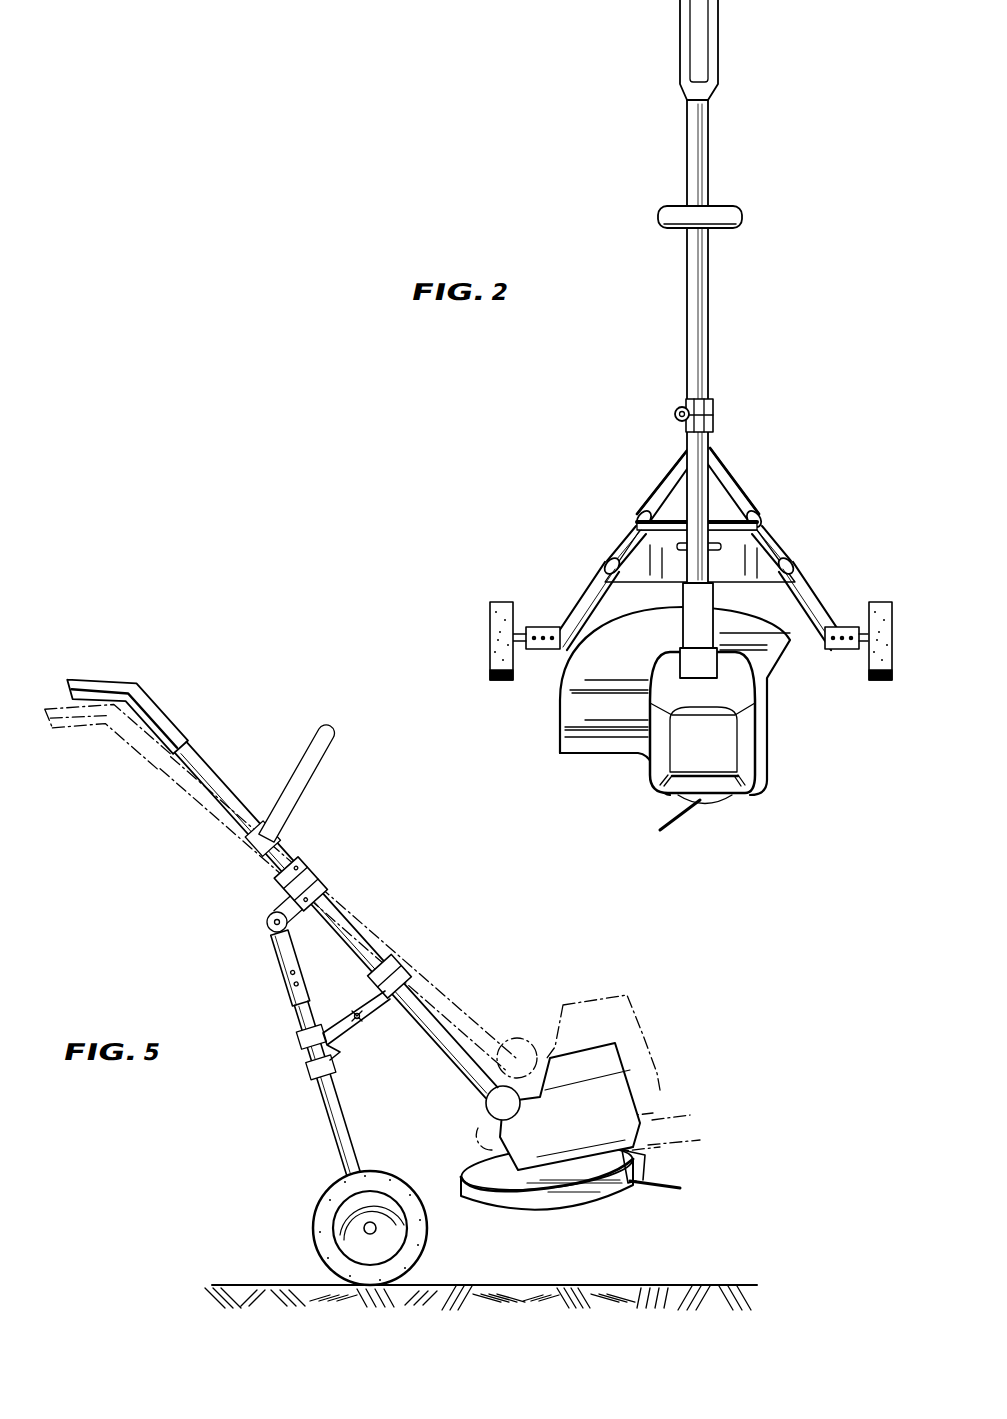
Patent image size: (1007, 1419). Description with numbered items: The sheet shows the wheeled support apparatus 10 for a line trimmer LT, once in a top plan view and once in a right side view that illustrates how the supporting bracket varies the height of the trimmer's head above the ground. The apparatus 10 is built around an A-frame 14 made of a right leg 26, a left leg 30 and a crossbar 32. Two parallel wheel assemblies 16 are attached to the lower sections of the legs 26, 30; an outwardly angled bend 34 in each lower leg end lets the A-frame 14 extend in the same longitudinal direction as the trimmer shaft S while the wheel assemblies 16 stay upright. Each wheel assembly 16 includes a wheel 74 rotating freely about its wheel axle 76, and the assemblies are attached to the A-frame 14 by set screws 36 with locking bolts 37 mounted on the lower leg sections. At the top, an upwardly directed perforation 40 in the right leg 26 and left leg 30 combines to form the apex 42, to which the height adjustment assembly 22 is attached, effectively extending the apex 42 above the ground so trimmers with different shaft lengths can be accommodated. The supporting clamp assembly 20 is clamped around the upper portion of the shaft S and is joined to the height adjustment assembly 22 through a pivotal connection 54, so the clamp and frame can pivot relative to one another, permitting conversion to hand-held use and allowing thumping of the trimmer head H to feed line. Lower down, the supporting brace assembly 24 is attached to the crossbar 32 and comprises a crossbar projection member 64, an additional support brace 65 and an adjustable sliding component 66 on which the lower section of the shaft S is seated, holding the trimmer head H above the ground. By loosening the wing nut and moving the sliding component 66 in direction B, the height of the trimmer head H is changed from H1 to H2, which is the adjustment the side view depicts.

In FIG. 2, the apparatus 10 is at (812, 325).
In FIG. 5, the apparatus 10 is at (442, 915).
In FIG. 2, the A-frame 14 is at (778, 527).
In FIG. 5, the A-frame 14 is at (275, 1115).
In FIG. 2, the wheel assembly 16 is at (525, 692).
In FIG. 2, the supporting clamp assembly 20 is at (668, 418).
In FIG. 5, the supporting clamp assembly 20 is at (318, 862).
In FIG. 5, the height adjustment assembly 22 is at (280, 950).
In FIG. 5, the supporting brace assembly 24 is at (388, 1090).
In FIG. 2, the right leg 26 is at (652, 502).
In FIG. 2, the left leg 30 is at (775, 545).
In FIG. 2, the crossbar 32 is at (660, 572).
In FIG. 2, the outwardly angled bend 34 is at (561, 654).
In FIG. 2, the set screw 36 is at (860, 665).
In FIG. 2, the locking bolt 37 is at (843, 634).
In FIG. 5, the upwardly directed perforation 40 is at (297, 983).
In FIG. 5, the apex 42 is at (290, 972).
In FIG. 5, the pivotal connection 54 is at (272, 913).
In FIG. 5, the crossbar projection member 64 is at (330, 1030).
In FIG. 5, the additional support brace 65 is at (340, 1052).
In FIG. 5, the adjustable sliding component 66 is at (380, 990).
In FIG. 2, the wheel 74 is at (487, 622).
In FIG. 5, the wheel 74 is at (313, 1228).
In FIG. 2, the wheel axle 76 is at (520, 632).
In FIG. 2, the line trimmer LT is at (780, 118).
In FIG. 5, the line trimmer LT is at (80, 672).
In FIG. 2, the shaft S is at (702, 440).
In FIG. 5, the shaft S is at (468, 1066).
In FIG. 2, the trimmer head H is at (712, 758).
In FIG. 5, the trimmer head H is at (613, 1085).
In FIG. 5, the direction of adjustment B is at (398, 1012).
In FIG. 5, the first head height H1 is at (683, 1188).
In FIG. 5, the second head height H2 is at (728, 1136).